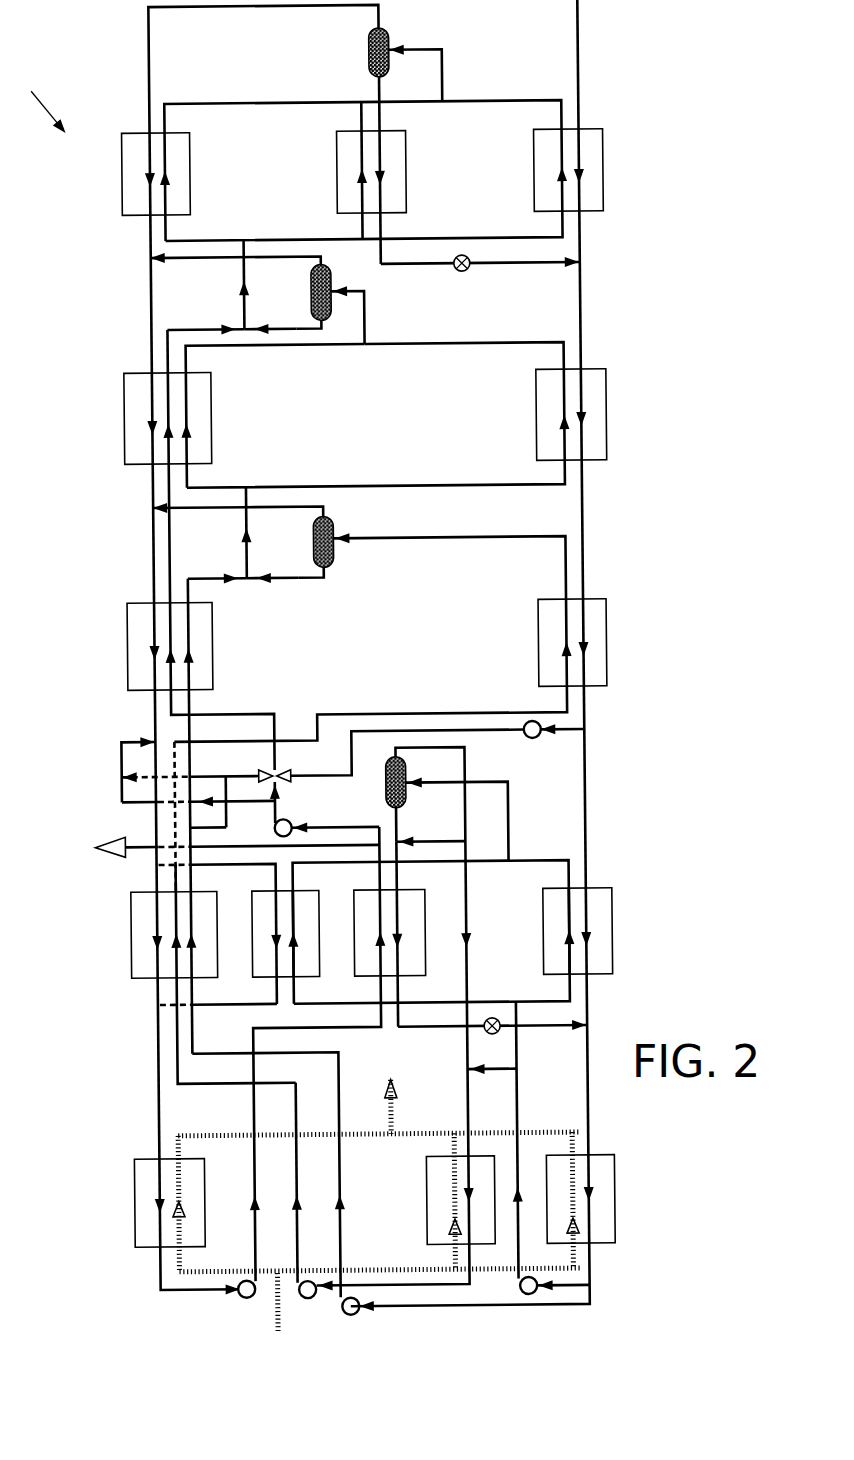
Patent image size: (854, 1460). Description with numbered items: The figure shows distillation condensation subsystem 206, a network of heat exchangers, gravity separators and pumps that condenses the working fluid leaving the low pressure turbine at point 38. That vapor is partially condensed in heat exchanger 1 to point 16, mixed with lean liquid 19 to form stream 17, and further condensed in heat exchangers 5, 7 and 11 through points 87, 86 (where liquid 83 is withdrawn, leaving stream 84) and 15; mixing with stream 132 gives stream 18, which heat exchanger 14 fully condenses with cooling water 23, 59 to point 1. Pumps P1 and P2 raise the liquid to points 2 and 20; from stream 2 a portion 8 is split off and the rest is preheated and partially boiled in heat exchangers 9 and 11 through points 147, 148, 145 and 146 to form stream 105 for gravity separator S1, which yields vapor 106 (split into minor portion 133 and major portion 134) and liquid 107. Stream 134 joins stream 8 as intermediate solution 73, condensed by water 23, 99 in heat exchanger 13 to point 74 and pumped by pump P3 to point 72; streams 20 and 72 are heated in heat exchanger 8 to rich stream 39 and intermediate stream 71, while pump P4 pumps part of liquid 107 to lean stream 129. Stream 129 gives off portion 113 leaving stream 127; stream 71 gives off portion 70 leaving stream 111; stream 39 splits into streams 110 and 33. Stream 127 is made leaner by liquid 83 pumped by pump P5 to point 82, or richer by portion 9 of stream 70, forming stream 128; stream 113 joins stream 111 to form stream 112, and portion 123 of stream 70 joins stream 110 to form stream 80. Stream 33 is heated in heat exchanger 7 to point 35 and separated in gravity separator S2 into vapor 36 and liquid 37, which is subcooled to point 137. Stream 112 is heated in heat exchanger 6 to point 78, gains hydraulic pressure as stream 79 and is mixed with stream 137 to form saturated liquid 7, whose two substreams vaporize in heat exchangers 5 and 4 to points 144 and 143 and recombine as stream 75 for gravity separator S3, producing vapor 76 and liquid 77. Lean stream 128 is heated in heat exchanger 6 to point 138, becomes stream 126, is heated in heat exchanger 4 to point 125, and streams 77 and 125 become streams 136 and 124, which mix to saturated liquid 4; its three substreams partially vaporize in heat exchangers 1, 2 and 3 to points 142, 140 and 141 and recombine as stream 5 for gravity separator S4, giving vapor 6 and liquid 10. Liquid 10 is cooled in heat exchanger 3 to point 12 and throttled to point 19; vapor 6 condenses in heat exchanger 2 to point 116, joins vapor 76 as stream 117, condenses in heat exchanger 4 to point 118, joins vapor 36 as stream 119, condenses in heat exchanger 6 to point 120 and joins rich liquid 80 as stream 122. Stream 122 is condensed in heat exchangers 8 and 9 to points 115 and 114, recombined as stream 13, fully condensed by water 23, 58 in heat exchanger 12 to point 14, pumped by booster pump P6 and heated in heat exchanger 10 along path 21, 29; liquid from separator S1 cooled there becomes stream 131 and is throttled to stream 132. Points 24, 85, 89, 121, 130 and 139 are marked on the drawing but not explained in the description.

The distillation condensation subsystem 206 is at (36, 99).
The heat exchanger 1 is at (477, 720).
The heat exchanger 2 is at (329, 705).
The heat exchanger 3 is at (372, 172).
The heat exchanger 4 is at (187, 352).
The heat exchanger 5 is at (498, 252).
The heat exchanger 6 is at (253, 347).
The heat exchanger 7 is at (417, 587).
The heat exchanger 8 is at (324, 990).
The heat exchanger 9 is at (282, 867).
The heat exchanger 10 is at (380, 527).
The heat exchanger 11 is at (388, 911).
The heat exchanger 12 is at (267, 712).
The heat exchanger 13 is at (359, 1180).
The heat exchanger 14 is at (376, 1225).
The stream point 15 is at (601, 1070).
The stream point 16 is at (590, 195).
The stream point 17 is at (594, 315).
The stream point 18 is at (599, 1174).
The stream point 19 is at (480, 270).
The stream point 20 is at (281, 1175).
The stream point 21 is at (310, 1054).
The cooling water inlet 23 is at (266, 1302).
The stream 24 is at (391, 1092).
The stream point 29 is at (125, 861).
The stream point 33 is at (372, 670).
The stream point 35 is at (449, 566).
The stream point 36 is at (284, 519).
The stream point 37 is at (325, 577).
The stream point 38 is at (563, 64).
The stream point 39 is at (175, 878).
The cooling water outlet 58 is at (189, 1204).
The cooling water outlet 59 is at (562, 1199).
The stream point 70 is at (219, 836).
The stream point 71 is at (217, 878).
The stream point 72 is at (311, 1182).
The stream point 73 is at (458, 1123).
The stream point 74 is at (408, 1267).
The stream point 75 is at (361, 315).
The stream point 76 is at (236, 267).
The stream point 77 is at (322, 328).
The stream point 78 is at (198, 647).
The stream point 79 is at (217, 571).
The stream point 80 is at (138, 769).
The stream point 82 is at (407, 753).
The stream point 83 is at (562, 740).
The stream point 84 is at (597, 808).
The conduit 85 is at (595, 956).
The stream point 86 is at (594, 664).
The stream point 87 is at (593, 484).
The conduit 89 is at (199, 973).
The cooling water outlet 99 is at (442, 1200).
The stream point 105 is at (475, 818).
The stream point 106 is at (430, 804).
The stream point 107 is at (415, 822).
The stream point 110 is at (136, 803).
The stream point 111 is at (208, 802).
The stream point 112 is at (207, 794).
The stream point 113 is at (198, 794).
The stream point 114 is at (160, 1061).
The stream point 115 is at (235, 994).
The stream point 116 is at (134, 195).
The stream point 117 is at (133, 315).
The stream point 118 is at (136, 440).
The stream point 119 is at (134, 555).
The stream point 120 is at (137, 672).
The conduit 121 is at (267, 947).
The stream point 122 is at (251, 860).
The stream point 123 is at (190, 769).
The stream point 124 is at (205, 323).
The stream point 125 is at (173, 342).
The stream point 126 is at (199, 520).
The stream point 127 is at (291, 802).
The stream point 128 is at (235, 732).
The stream point 129 is at (314, 820).
The conduit 130 is at (413, 865).
The stream point 131 is at (416, 957).
The stream point 132 is at (492, 1032).
The stream point 133 is at (430, 834).
The stream point 134 is at (484, 931).
The stream point 136 is at (273, 323).
The stream point 137 is at (276, 588).
The stream point 138 is at (185, 544).
The conduit 139 is at (146, 935).
The stream point 140 is at (269, 171).
The stream point 141 is at (349, 170).
The stream point 142 is at (365, 170).
The stream point 143 is at (273, 416).
The stream point 144 is at (378, 415).
The stream point 145 is at (345, 933).
The stream point 146 is at (431, 932).
The stream point 147 is at (308, 933).
The stream point 148 is at (555, 931).
The gravity separator S1 is at (382, 783).
The gravity separator S2 is at (310, 541).
The gravity separator S3 is at (307, 292).
The gravity separator S4 is at (363, 52).
The pump P1 is at (542, 1284).
The pump P2 is at (349, 1321).
The pump P3 is at (301, 1303).
The pump P4 is at (298, 821).
The pump P5 is at (519, 739).
The booster pump P6 is at (237, 1304).